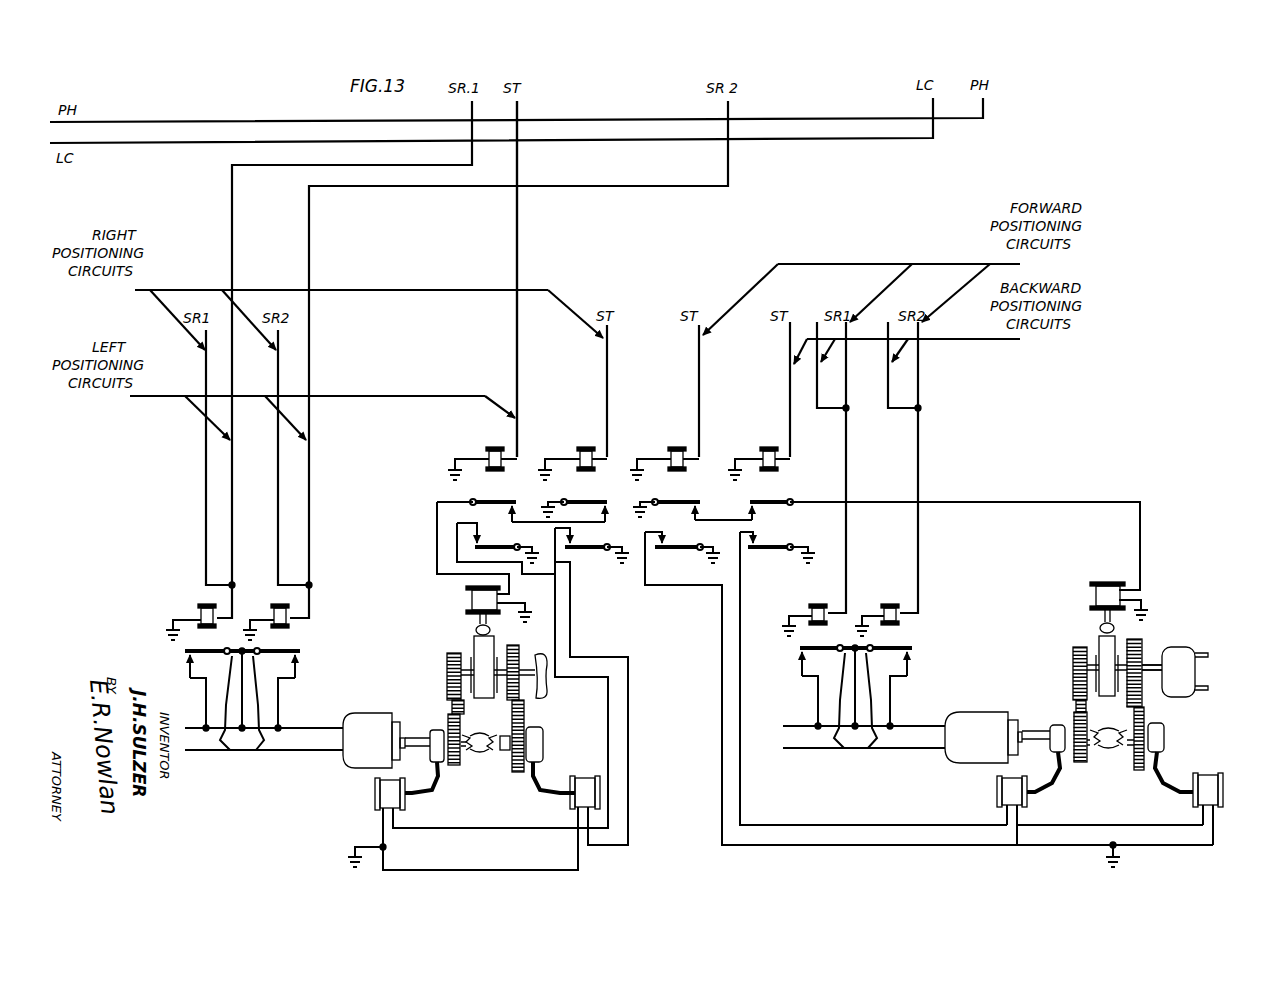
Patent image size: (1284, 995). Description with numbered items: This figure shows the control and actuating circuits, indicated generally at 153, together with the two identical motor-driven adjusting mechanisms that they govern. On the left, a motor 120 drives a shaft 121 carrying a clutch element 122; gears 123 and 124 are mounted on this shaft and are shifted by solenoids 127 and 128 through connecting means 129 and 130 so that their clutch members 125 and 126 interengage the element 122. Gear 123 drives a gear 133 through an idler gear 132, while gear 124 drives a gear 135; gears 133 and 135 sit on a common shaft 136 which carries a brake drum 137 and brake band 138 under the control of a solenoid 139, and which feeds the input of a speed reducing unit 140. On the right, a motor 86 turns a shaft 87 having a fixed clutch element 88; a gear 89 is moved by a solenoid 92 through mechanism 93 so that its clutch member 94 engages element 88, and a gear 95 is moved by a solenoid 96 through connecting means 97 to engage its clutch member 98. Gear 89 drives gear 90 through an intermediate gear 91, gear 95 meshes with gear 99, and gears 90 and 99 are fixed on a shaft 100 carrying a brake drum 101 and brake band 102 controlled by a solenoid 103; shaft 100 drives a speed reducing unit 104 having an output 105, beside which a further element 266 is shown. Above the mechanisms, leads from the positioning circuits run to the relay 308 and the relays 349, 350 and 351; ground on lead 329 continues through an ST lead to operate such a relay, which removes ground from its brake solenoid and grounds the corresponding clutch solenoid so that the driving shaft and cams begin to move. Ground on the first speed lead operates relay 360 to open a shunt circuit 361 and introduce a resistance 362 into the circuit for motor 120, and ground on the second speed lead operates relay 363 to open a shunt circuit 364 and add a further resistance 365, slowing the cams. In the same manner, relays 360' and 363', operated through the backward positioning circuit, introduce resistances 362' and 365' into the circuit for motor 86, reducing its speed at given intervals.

The positioning control system 153 is at (932, 202).
The lead 329 is at (517, 332).
The relay 308 is at (492, 447).
The relay 349 is at (590, 447).
The relay 350 is at (680, 447).
The relay 351 is at (768, 447).
The relay 360 is at (181, 614).
The relay 363 is at (266, 614).
The shunt circuit 361 is at (189, 672).
The resistance 362 is at (221, 699).
The resistance 365 is at (265, 699).
The shunt circuit 364 is at (296, 674).
The relay 360' is at (795, 611).
The relay 363' is at (877, 611).
The resistance 362' is at (856, 696).
The resistance 365' is at (884, 696).
The solenoid 139 is at (470, 600).
The brake band 138 is at (480, 645).
The brake drum 137 is at (472, 656).
The gear 133 is at (447, 674).
The idler gear 132 is at (452, 706).
The clutch member 125 is at (462, 752).
The common shaft 136 is at (477, 725).
The gear 135 is at (520, 700).
The clutch member 126 is at (528, 730).
The speed reducing unit 140 is at (546, 688).
The motor 120 is at (372, 724).
The shaft 121 is at (430, 732).
The gear 123 is at (446, 766).
The clutch element 122 is at (488, 790).
The gear 124 is at (490, 752).
The solenoid 128 is at (597, 768).
The connecting means 130 is at (543, 798).
The solenoid 127 is at (378, 794).
The connecting means 129 is at (425, 798).
The solenoid 103 is at (1110, 583).
The brake band 102 is at (1100, 630).
The brake drum 101 is at (1099, 648).
The gear 90 is at (1073, 668).
The intermediate gear 91 is at (1076, 706).
The gear 89 is at (1078, 766).
The gear 99 is at (1143, 650).
The gear 95 is at (1140, 772).
The speed reducing unit 104 is at (1180, 656).
The shaft 100 is at (1152, 674).
The cam follower 266 is at (1210, 656).
The output 105 is at (1208, 688).
The motor 86 is at (985, 716).
The shaft 87 is at (1031, 731).
The mechanism 93 is at (1047, 792).
The clutch element 88 is at (1110, 729).
The clutch member 94 is at (1089, 752).
The clutch member 98 is at (1130, 750).
The connecting means 97 is at (1172, 797).
The solenoid 92 is at (997, 792).
The solenoid 96 is at (1223, 791).